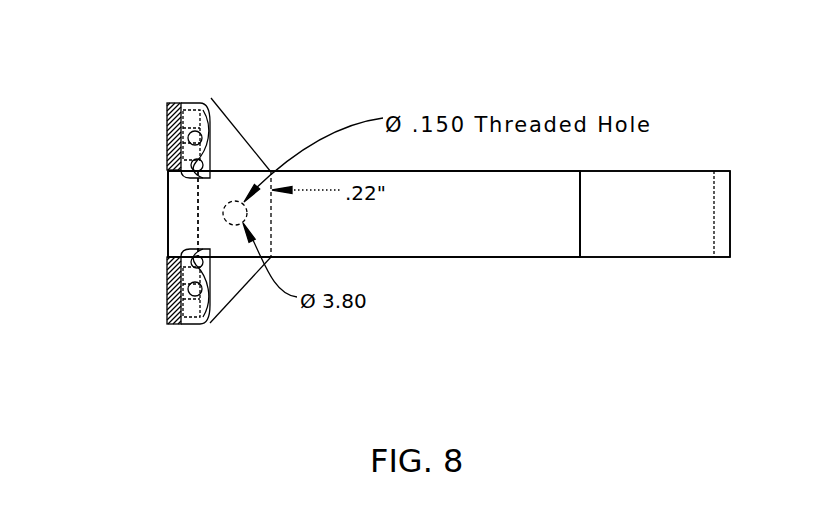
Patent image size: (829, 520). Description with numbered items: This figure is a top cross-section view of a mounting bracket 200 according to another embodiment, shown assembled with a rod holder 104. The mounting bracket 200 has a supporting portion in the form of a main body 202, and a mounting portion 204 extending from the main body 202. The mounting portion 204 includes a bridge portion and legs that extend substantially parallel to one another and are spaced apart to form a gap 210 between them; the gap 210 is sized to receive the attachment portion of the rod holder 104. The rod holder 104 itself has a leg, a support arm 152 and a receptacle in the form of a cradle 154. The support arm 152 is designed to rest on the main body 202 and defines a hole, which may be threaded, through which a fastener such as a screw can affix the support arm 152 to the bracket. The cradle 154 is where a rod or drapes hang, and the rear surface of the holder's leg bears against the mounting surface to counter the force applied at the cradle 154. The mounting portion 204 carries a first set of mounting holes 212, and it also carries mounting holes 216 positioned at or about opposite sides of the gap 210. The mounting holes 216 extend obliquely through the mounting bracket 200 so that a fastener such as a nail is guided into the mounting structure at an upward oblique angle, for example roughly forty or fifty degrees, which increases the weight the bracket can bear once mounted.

The mounting bracket 200 is at (116, 100).
The main body 202 is at (240, 270).
The rod holder 104 is at (542, 192).
The support arm 152 is at (507, 250).
The cradle 154 is at (675, 177).
The mounting portion 204 is at (172, 103).
The mounting holes 216 is at (205, 118).
The first set of mounting holes 212 is at (203, 160).
The gap 210 is at (203, 196).